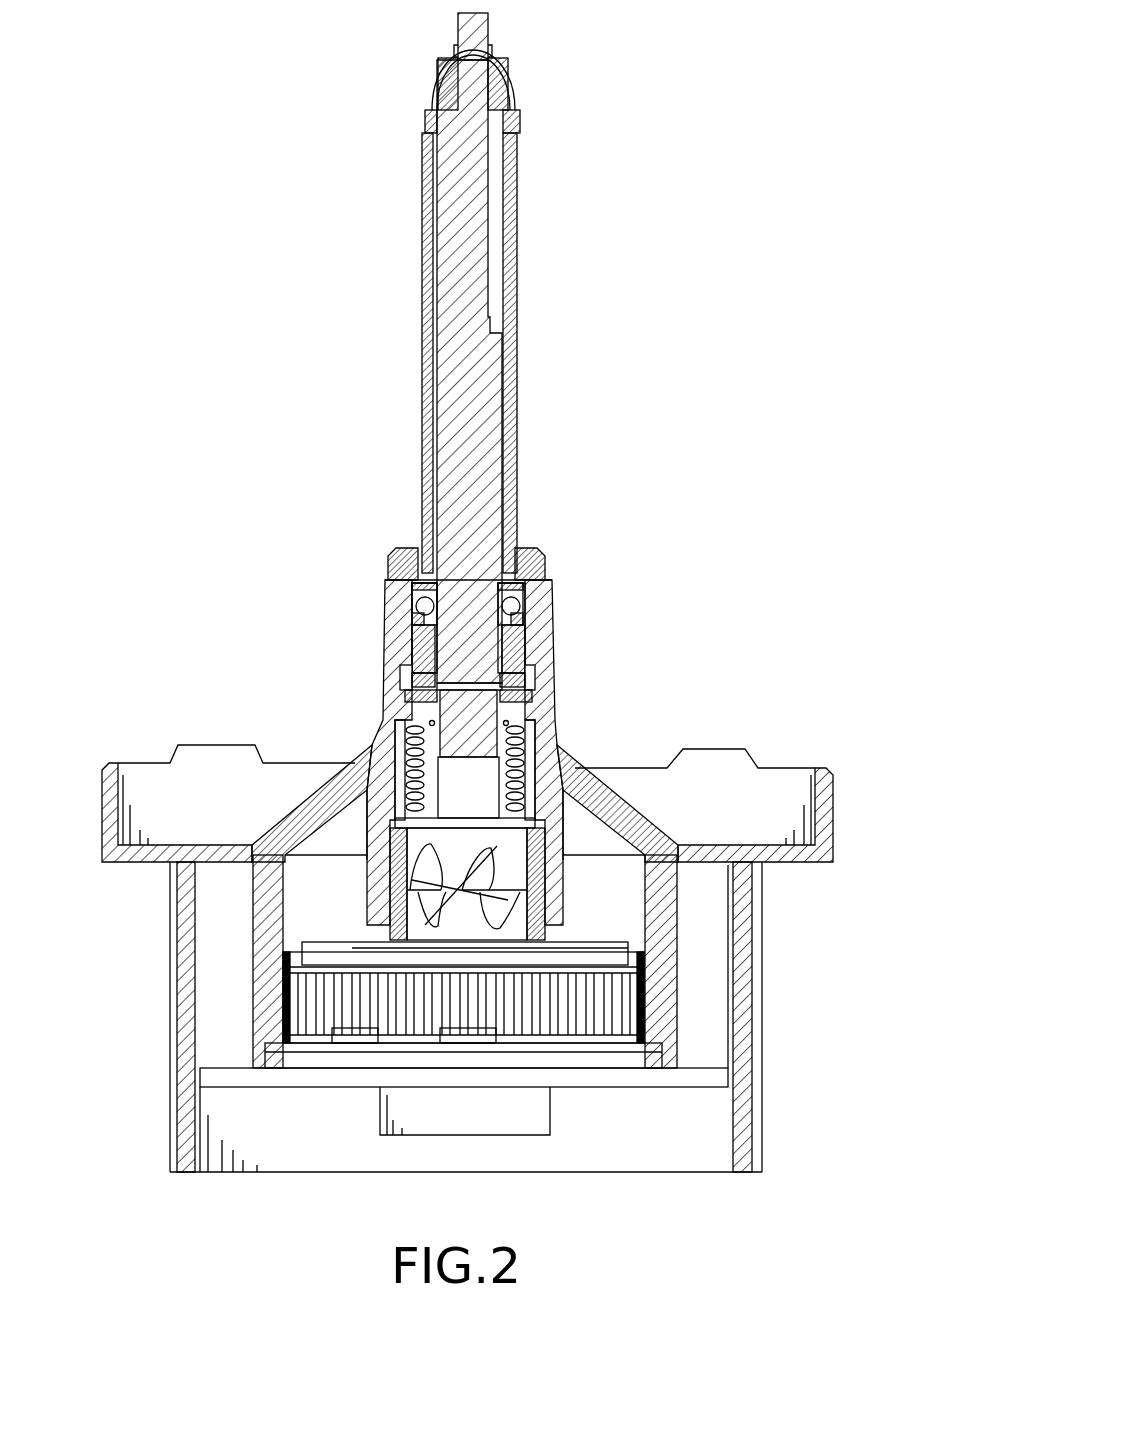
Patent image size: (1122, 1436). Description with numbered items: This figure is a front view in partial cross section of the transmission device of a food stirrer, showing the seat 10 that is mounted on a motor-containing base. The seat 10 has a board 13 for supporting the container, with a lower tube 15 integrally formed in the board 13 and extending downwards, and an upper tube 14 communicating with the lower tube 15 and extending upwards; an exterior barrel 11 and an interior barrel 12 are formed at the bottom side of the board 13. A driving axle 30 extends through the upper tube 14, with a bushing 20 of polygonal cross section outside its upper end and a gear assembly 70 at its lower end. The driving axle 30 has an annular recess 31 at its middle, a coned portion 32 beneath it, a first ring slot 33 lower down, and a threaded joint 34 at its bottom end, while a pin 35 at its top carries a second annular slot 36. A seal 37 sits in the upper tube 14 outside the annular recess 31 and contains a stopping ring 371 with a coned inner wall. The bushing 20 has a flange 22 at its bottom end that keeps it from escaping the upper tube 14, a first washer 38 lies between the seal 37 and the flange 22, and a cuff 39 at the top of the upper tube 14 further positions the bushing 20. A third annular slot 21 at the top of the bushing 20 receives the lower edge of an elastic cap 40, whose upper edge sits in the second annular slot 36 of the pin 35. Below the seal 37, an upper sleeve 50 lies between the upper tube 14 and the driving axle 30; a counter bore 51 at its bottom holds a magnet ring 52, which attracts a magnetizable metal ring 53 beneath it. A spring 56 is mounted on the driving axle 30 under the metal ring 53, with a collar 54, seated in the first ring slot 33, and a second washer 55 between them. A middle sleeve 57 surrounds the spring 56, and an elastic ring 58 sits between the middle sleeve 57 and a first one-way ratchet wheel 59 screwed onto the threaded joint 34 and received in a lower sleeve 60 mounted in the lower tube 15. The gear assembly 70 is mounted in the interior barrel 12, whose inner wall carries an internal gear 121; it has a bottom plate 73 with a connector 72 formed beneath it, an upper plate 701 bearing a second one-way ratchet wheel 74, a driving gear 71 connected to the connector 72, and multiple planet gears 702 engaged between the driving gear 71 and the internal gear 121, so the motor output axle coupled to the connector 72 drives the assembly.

The seat 10 is at (766, 1024).
The exterior barrel 11 is at (729, 1082).
The interior barrel 12 is at (661, 896).
The internal gear 121 is at (646, 960).
The board 13 is at (784, 852).
The upper tube 14 is at (538, 604).
The lower tube 15 is at (606, 830).
The bushing 20 is at (518, 244).
The third annular slot 21 is at (522, 118).
The flange 22 is at (402, 556).
The driving axle 30 is at (488, 376).
The annular recess 31 is at (519, 542).
The coned portion 32 is at (418, 658).
The first ring slot 33 is at (404, 750).
The threaded joint 34 is at (560, 884).
The pin 35 is at (496, 40).
The second annular slot 36 is at (452, 48).
The seal 37 is at (418, 610).
The stopping ring 371 is at (420, 624).
The first washer 38 is at (417, 589).
The cuff 39 is at (546, 556).
The elastic cap 40 is at (517, 80).
The upper sleeve 50 is at (528, 640).
The counter bore 51 is at (531, 672).
The magnet ring 52 is at (528, 695).
The magnetizable metal ring 53 is at (416, 684).
The collar 54 is at (430, 720).
The second washer 55 is at (528, 718).
The spring 56 is at (531, 746).
The middle sleeve 57 is at (555, 850).
The elastic ring 58 is at (576, 770).
The first one-way ratchet wheel 59 is at (394, 840).
The lower sleeve 60 is at (576, 896).
The gear assembly 70 is at (283, 1004).
The upper plate 701 is at (562, 952).
The planet gears 702 is at (345, 1046).
The driving gear 71 is at (447, 1046).
The connector 72 is at (478, 1122).
The bottom plate 73 is at (648, 1086).
The second one-way ratchet wheel 74 is at (446, 924).